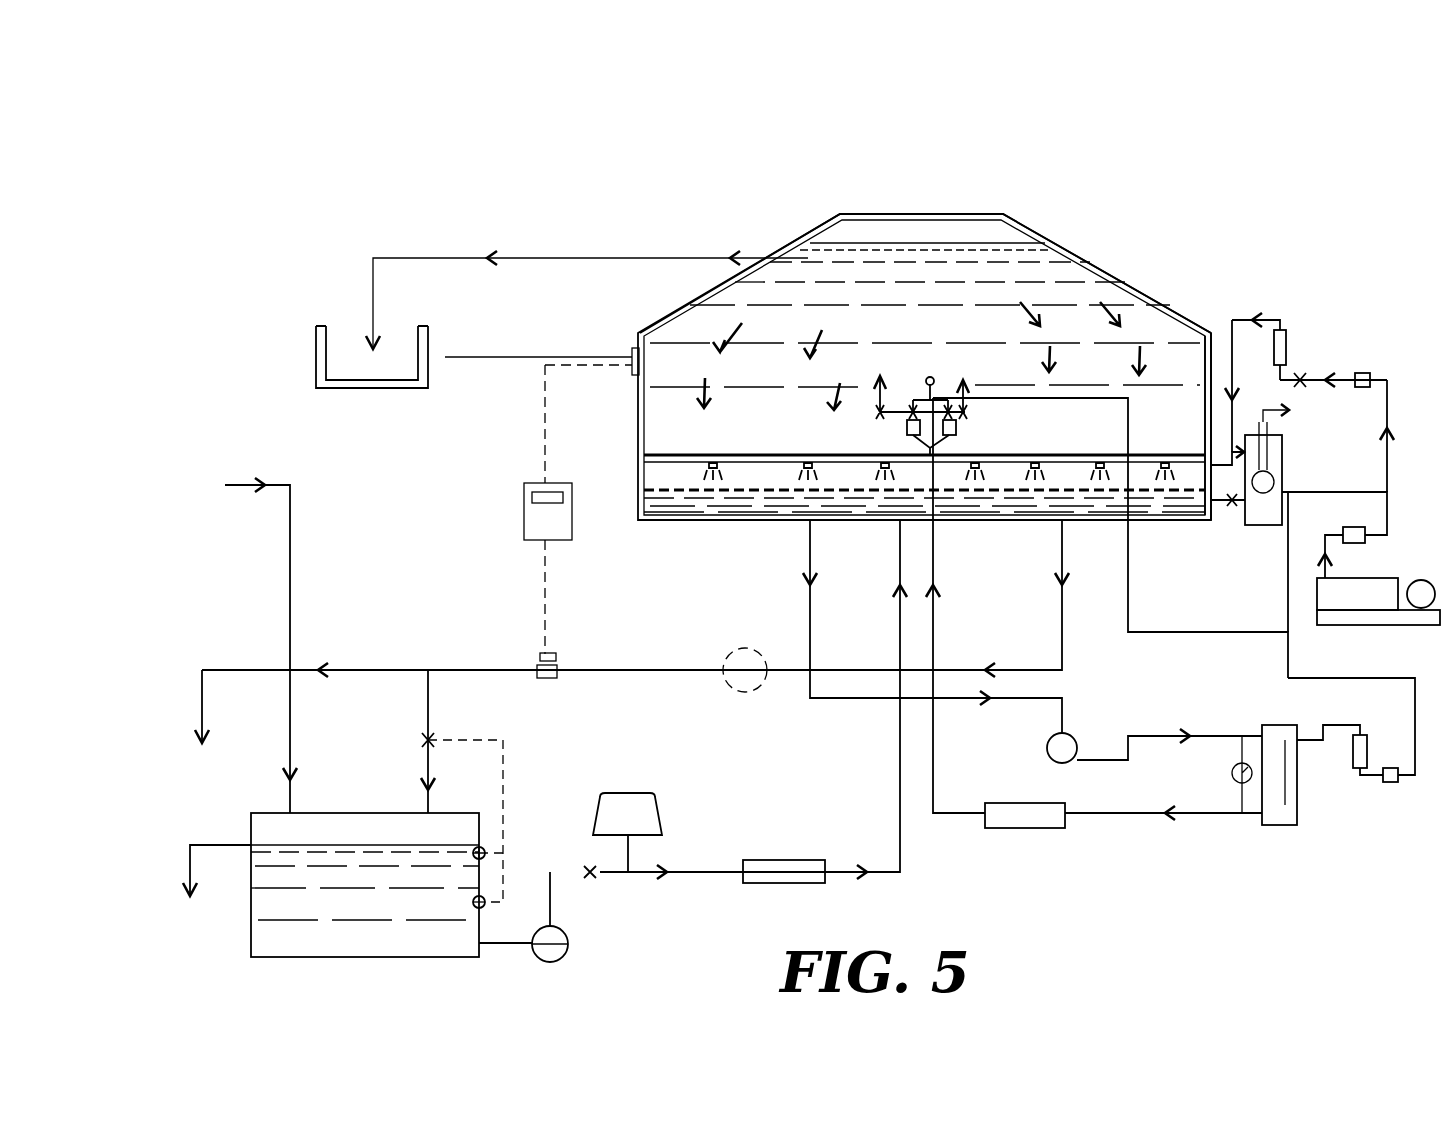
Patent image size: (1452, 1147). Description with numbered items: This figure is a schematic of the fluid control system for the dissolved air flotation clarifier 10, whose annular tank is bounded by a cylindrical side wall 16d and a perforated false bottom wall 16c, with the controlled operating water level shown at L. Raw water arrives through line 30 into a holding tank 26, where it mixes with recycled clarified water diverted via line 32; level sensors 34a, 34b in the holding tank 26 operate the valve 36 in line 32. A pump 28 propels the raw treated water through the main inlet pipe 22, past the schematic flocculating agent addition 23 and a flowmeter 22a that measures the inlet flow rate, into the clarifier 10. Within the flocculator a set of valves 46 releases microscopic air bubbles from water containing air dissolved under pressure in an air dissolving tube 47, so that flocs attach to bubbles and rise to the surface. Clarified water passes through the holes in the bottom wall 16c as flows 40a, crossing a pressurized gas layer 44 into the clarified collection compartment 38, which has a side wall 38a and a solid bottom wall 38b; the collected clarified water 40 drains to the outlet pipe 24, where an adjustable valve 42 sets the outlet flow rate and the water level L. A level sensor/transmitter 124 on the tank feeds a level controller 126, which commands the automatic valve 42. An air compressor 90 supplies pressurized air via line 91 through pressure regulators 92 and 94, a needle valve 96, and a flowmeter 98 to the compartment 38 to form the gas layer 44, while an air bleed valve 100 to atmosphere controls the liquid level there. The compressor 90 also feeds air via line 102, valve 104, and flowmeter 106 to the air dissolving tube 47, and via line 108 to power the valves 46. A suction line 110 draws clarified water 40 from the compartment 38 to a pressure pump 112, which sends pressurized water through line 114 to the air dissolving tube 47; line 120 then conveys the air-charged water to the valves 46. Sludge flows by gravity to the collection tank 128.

The dissolved air flotation clarifier 10 is at (1150, 255).
The tank bottom wall 16c is at (1050, 240).
The cylindrical side wall 16d is at (1210, 345).
The water level L is at (935, 245).
The main inlet pipe 22 is at (900, 625).
The flowmeter 22a is at (785, 860).
The flocculating agent addition 23 is at (655, 812).
The outlet pipe 24 is at (262, 670).
The holding tank 26 is at (251, 912).
The pump 28 is at (568, 940).
The raw water line 30 is at (290, 565).
The recycle line 32 is at (428, 700).
The level sensor 34a is at (486, 853).
The level sensor 34b is at (486, 900).
The valve 36 is at (420, 740).
The clarified collection compartment 38 is at (634, 496).
The compartment side wall 38a is at (1215, 505).
The compartment bottom wall 38b is at (1138, 522).
The clarified water 40 is at (740, 505).
The clarified water flows 40a is at (730, 470).
The adjustable valve 42 is at (558, 655).
The pressurized gas layer 44 is at (690, 465).
The valves 46 is at (905, 427).
The air dissolving tube 47 is at (1297, 792).
The air compressor 90 is at (1390, 578).
The air line 91 is at (1390, 508).
The pressure regulator 92 is at (1352, 527).
The pressure regulator 94 is at (1363, 373).
The needle valve 96 is at (1300, 372).
The flowmeter 98 is at (1284, 332).
The air bleed valve 100 is at (1283, 458).
The air line 102 is at (1350, 678).
The valve 104 is at (1390, 782).
The flowmeter 106 is at (1368, 748).
The air line 108 is at (1182, 632).
The suction line 110 is at (810, 625).
The pressure pump 112 is at (1072, 740).
The pressurized water line 114 is at (1150, 736).
The air-dissolved water line 120 is at (935, 732).
The level sensor/transmitter 124 is at (632, 352).
The level controller 126 is at (572, 532).
The collection tank 128 is at (316, 348).